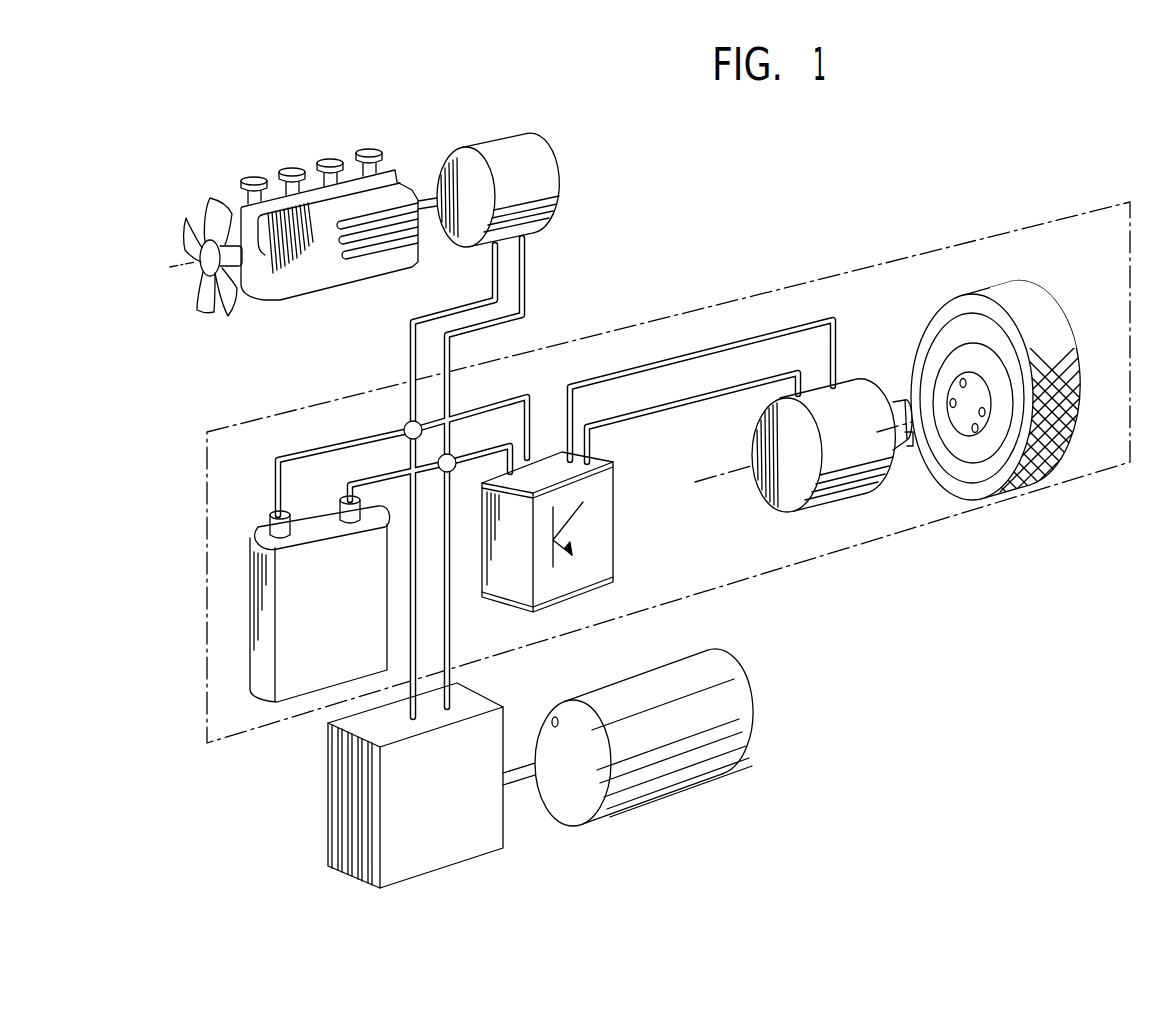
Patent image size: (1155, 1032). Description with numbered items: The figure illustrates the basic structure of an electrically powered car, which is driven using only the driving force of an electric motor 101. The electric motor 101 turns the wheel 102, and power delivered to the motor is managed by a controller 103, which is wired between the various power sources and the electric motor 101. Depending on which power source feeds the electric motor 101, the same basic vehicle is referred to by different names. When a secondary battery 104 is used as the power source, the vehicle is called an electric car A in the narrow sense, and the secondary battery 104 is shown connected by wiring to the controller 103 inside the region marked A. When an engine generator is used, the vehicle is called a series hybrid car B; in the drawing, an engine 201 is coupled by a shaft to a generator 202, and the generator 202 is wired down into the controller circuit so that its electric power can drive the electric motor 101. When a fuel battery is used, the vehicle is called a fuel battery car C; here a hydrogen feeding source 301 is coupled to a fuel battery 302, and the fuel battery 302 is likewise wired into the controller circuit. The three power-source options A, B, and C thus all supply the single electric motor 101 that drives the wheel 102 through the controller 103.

The electric car in the narrow sense A is at (1037, 222).
The series hybrid car B is at (404, 208).
The fuel battery car C is at (574, 763).
The electric motor 101 is at (827, 502).
The wheel 102 is at (1042, 307).
The controller 103 is at (618, 542).
The secondary battery 104 is at (260, 523).
The engine 201 is at (293, 162).
The generator 202 is at (543, 142).
The hydrogen feeding source 301 is at (683, 795).
The fuel battery 302 is at (507, 833).